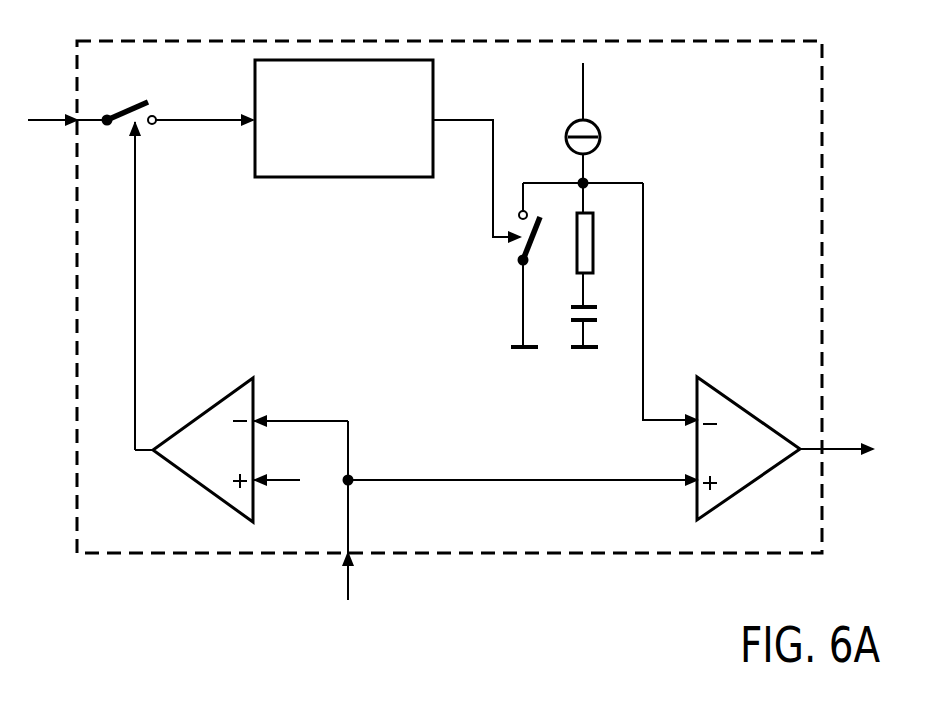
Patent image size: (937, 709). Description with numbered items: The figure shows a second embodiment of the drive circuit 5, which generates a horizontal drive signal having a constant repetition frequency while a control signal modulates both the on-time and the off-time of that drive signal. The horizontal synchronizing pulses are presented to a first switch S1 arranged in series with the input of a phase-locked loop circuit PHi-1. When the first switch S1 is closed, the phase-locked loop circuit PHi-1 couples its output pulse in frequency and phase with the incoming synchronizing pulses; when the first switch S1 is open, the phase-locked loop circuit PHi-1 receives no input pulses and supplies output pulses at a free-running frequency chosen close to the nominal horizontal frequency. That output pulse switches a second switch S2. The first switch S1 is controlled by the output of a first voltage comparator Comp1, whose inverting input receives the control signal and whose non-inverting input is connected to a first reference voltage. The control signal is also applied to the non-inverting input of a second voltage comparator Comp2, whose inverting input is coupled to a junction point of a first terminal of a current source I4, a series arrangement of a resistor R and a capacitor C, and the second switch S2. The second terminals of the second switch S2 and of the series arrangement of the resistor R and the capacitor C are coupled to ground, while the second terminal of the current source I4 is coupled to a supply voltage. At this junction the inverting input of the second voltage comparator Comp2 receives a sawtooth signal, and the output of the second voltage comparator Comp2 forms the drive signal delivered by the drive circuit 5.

The drive circuit 5 is at (824, 98).
The first switch S1 is at (126, 110).
The second switch S2 is at (538, 228).
The phase-locked loop circuit PHi-1 is at (344, 118).
The current source I4 is at (620, 113).
The resistor R is at (596, 243).
The capacitor C is at (598, 313).
The first voltage comparator Comp1 is at (203, 450).
The second voltage comparator Comp2 is at (748, 448).